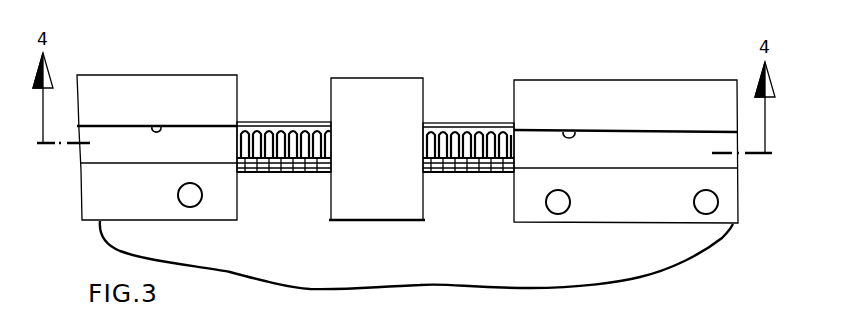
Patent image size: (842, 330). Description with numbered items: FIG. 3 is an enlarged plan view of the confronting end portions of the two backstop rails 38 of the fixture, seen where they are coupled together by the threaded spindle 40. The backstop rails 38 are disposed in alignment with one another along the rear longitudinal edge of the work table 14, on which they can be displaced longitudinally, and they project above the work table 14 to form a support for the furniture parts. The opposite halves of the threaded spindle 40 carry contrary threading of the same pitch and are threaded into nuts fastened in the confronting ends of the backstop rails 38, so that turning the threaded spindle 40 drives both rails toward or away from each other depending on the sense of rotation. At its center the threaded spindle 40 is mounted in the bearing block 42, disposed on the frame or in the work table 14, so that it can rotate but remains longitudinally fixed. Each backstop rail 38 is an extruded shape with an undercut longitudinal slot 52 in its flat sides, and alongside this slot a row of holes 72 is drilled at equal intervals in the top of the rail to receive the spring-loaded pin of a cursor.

The work table 14 is at (460, 265).
The backstop rails 38 is at (106, 75).
The threaded spindle 40 is at (467, 122).
The bearing block 42 is at (400, 87).
The undercut longitudinal slot 52 is at (152, 126).
The holes 72 is at (210, 233).